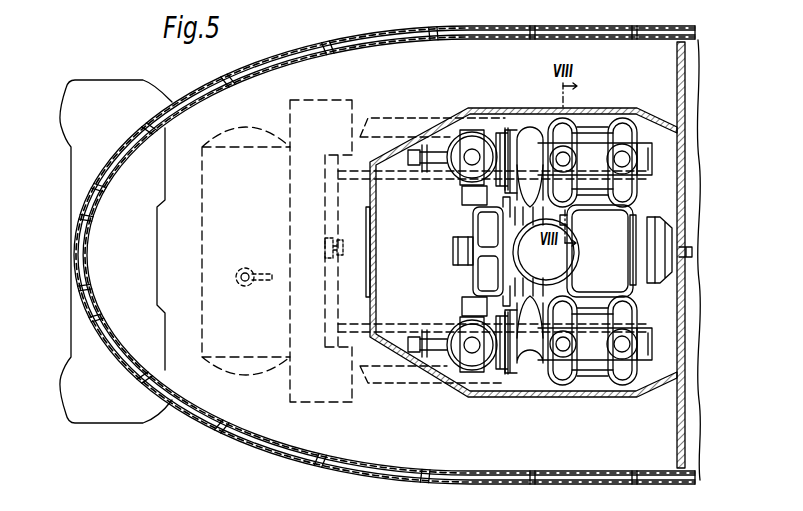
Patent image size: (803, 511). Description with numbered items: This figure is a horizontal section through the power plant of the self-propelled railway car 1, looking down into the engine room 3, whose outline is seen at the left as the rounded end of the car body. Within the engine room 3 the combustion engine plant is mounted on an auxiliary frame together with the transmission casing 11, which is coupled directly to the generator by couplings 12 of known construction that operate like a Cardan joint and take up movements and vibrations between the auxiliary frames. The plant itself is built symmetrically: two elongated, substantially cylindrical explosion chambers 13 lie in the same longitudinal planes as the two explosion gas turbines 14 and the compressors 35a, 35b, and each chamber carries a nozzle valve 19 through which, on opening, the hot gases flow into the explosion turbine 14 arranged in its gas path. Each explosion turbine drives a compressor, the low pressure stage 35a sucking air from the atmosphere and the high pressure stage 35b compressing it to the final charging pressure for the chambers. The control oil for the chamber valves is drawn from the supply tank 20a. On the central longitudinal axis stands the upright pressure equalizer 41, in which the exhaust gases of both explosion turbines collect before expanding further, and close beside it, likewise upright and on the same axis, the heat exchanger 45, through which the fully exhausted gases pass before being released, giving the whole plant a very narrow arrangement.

The self-propelled railway car 1 is at (118, 342).
The engine room 3 is at (667, 167).
The transmission casing 11 is at (615, 280).
The coupling 12 is at (658, 227).
The explosion chamber 13 is at (460, 168).
The explosion gas turbine 14 is at (527, 137).
The nozzle valve 19 is at (418, 173).
The supply tank 20a is at (210, 268).
The low pressure compressor stage 35a is at (595, 340).
The high pressure compressor stage 35b is at (595, 162).
The pressure equalizer 41 is at (546, 252).
The heat exchanger 45 is at (490, 272).